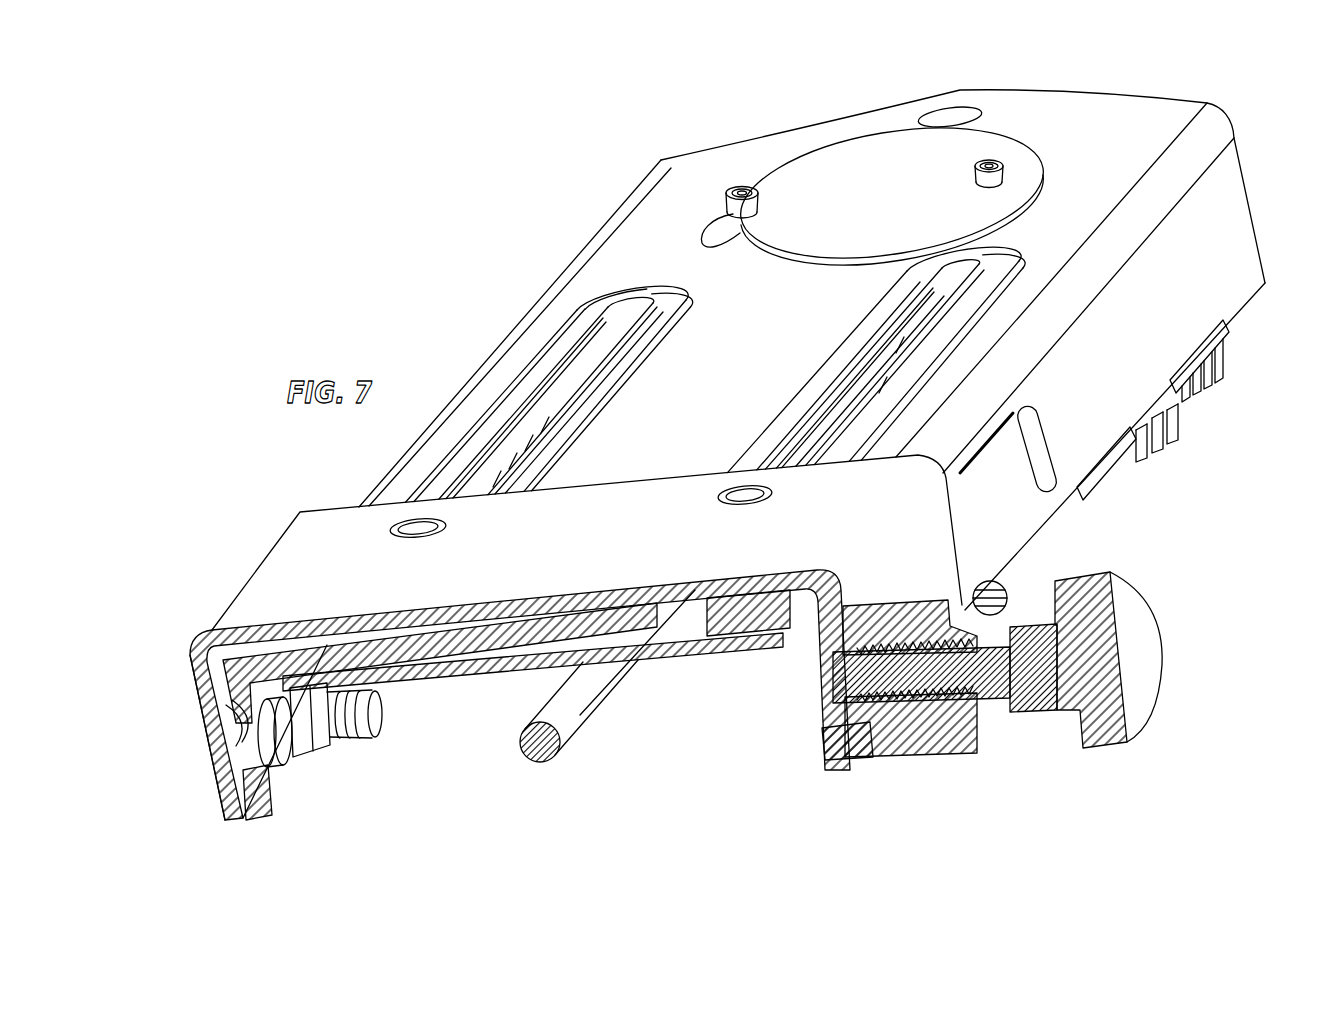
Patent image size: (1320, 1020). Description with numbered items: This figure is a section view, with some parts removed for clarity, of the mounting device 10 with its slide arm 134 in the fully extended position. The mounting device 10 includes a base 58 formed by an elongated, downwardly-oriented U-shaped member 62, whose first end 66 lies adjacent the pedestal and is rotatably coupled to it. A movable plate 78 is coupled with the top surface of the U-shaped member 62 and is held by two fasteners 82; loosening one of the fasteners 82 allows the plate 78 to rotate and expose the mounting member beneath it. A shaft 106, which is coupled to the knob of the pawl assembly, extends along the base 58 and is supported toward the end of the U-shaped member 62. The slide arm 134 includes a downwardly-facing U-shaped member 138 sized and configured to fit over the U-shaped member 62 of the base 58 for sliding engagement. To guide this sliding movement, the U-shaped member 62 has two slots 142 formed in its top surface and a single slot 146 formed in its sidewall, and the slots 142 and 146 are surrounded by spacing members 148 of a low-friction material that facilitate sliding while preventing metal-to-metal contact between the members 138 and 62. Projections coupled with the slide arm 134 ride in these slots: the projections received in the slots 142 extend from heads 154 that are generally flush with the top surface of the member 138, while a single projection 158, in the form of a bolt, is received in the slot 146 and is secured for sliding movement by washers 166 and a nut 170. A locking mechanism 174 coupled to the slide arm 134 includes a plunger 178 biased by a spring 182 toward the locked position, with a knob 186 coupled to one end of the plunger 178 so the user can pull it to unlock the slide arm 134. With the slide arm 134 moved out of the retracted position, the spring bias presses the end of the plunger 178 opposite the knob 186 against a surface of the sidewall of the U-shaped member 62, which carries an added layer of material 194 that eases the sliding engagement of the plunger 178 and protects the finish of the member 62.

The mounting device 10 is at (376, 244).
The base 58 is at (868, 124).
The U-shaped member 62 is at (795, 136).
The first end 66 is at (1243, 183).
The movable plate 78 is at (783, 183).
The fasteners 82 is at (733, 192).
The shaft 106 is at (580, 712).
The slide arm 134 is at (248, 560).
The U-shaped member 138 is at (187, 664).
The slots 142 is at (540, 403).
The slot 146 is at (253, 762).
The spacing members 148 is at (578, 413).
The heads 154 is at (432, 536).
The projection 158 is at (250, 727).
The washers 166 is at (300, 752).
The nut 170 is at (330, 732).
The locking mechanism 174 is at (986, 679).
The plunger 178 is at (897, 707).
The spring 182 is at (987, 713).
The knob 186 is at (1127, 590).
The added layer of material 194 is at (838, 758).